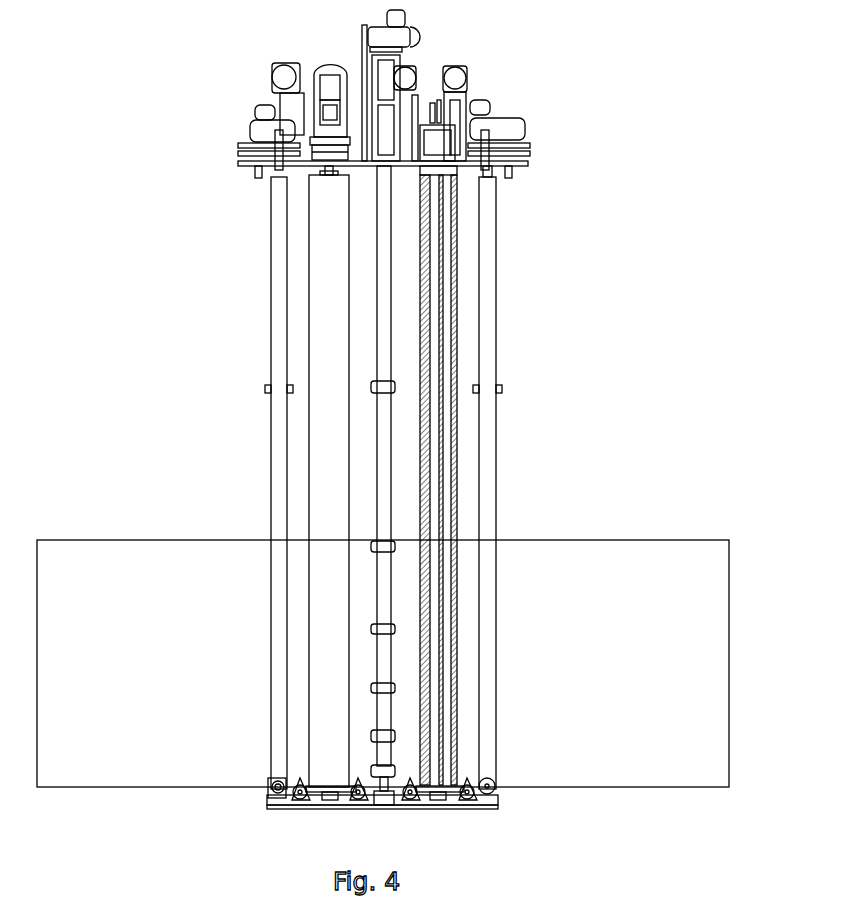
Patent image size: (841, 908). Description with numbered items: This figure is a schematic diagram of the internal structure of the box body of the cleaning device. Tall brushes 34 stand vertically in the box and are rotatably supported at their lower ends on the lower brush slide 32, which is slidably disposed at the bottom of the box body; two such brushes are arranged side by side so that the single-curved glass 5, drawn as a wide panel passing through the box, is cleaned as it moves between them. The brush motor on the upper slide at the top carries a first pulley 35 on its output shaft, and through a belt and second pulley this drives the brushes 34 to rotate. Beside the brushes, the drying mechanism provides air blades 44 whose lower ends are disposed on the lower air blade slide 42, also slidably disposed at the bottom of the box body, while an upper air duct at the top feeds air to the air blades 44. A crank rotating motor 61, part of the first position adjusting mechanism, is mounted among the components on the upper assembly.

The single-curved glass 5 is at (178, 540).
The lower brush slide 32 is at (330, 803).
The brushes 34 is at (325, 283).
The first pulley 35 is at (322, 152).
The lower air blade slide 42 is at (442, 810).
The air blades 44 is at (435, 303).
The crank rotating motor 61 is at (283, 77).